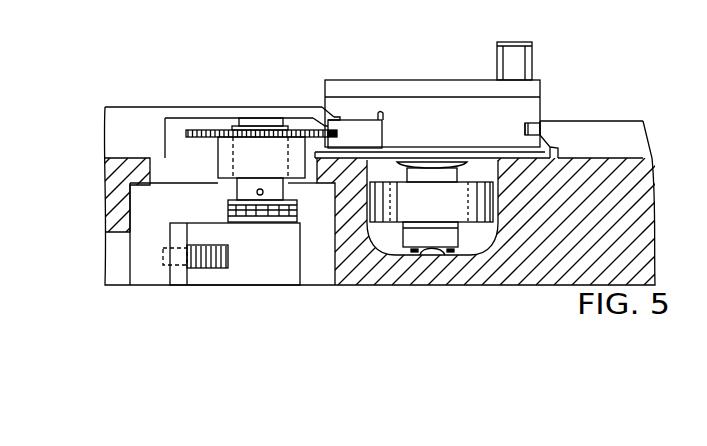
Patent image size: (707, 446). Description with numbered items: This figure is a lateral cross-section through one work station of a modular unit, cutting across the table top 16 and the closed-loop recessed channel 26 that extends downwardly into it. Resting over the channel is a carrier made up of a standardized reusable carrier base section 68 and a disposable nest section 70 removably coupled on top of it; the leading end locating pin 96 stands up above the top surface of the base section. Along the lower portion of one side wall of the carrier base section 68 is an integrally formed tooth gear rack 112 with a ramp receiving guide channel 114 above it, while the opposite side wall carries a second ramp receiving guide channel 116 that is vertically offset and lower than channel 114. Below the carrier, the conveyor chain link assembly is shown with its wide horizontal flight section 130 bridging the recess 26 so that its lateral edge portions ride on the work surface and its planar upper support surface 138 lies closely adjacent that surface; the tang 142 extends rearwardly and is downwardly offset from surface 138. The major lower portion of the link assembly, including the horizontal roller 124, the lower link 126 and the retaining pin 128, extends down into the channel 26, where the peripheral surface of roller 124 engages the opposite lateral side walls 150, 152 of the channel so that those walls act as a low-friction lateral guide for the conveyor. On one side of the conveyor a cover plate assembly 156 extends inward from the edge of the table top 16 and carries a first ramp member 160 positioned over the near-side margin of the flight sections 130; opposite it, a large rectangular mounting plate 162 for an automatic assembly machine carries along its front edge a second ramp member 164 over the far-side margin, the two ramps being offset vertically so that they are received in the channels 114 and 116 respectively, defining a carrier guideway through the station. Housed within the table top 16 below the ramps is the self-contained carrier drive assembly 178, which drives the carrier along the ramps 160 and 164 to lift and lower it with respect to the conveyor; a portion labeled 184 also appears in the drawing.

The table top 16 is at (650, 219).
The recessed channel 26 is at (477, 233).
The carrier base section 68 is at (448, 103).
The nest section 70 is at (412, 80).
The leading end locating pin 96 is at (518, 42).
The tooth gear rack 112 is at (384, 104).
The ramp receiving guide channel 114 is at (343, 117).
The ramp receiving guide channel 116 is at (524, 130).
The roller 124 is at (383, 204).
The lower link 126 is at (448, 252).
The retaining pin 128 is at (415, 250).
The flight section 130 is at (353, 158).
The upper support surface 138 is at (548, 143).
The tang 142 is at (438, 175).
The lateral side wall of channel 150 is at (368, 232).
The lateral side wall of channel 152 is at (500, 226).
The cover plate assembly 156 is at (257, 106).
The first ramp member 160 is at (318, 107).
The mounting plate 162 is at (600, 123).
The second ramp member 164 is at (538, 124).
The carrier drive assembly 178 is at (308, 242).
The rack 184 is at (197, 133).